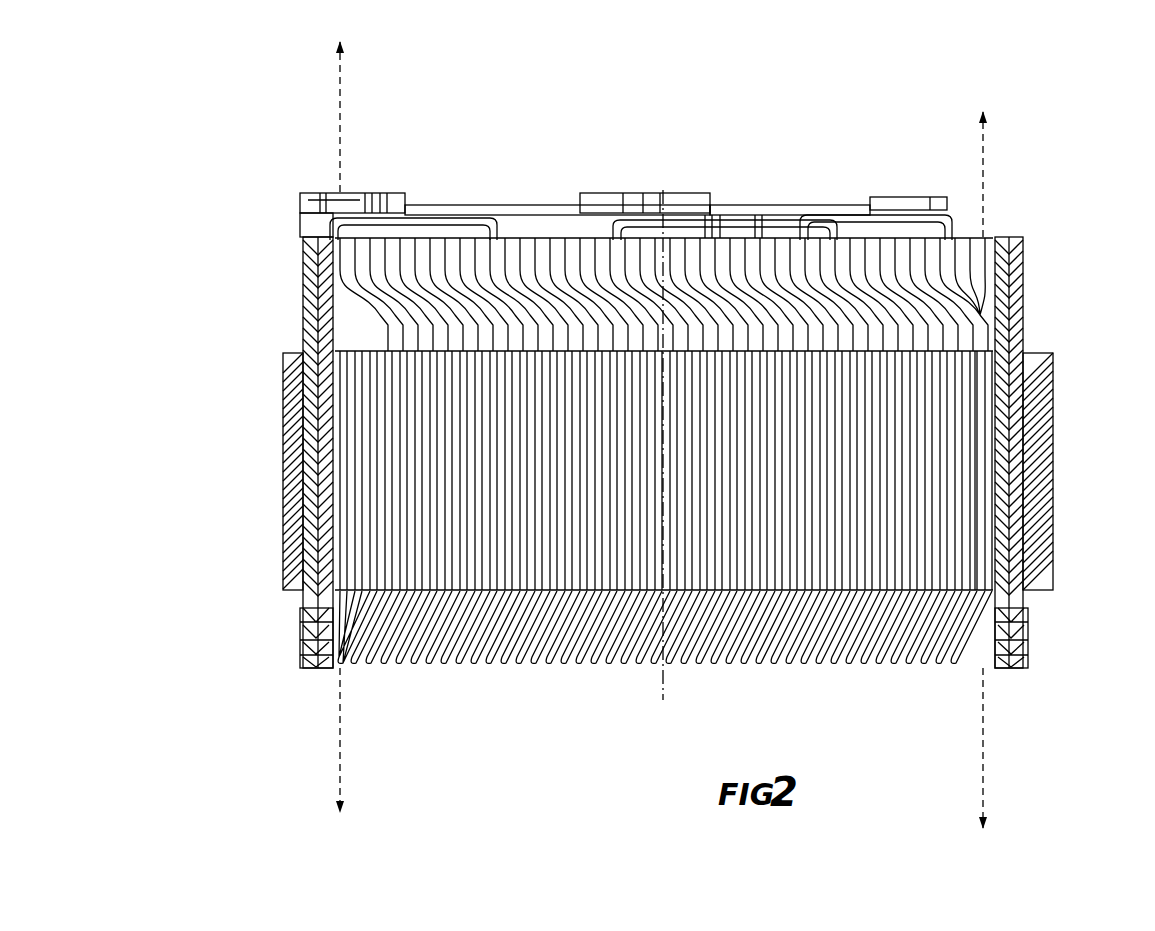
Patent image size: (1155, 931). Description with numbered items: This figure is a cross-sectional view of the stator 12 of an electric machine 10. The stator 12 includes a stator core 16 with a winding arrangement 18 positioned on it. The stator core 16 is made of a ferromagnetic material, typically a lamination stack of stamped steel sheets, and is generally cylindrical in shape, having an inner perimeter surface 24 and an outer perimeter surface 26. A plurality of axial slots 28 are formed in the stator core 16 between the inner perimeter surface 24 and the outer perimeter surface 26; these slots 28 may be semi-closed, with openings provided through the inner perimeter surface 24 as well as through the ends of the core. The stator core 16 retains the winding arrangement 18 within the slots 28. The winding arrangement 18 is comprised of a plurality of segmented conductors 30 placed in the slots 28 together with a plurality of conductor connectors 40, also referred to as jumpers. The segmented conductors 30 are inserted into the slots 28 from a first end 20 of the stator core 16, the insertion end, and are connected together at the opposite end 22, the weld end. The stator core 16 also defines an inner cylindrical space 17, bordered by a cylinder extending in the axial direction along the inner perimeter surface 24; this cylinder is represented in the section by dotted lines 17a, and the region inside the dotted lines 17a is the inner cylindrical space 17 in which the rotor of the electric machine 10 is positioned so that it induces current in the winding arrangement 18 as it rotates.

The electric machine 10 is at (228, 140).
The stator 12 is at (300, 318).
The stator core 16 is at (900, 432).
The inner cylindrical space 17 is at (920, 152).
The dotted lines 17a is at (342, 88).
The winding arrangement 18 is at (712, 218).
The first end 20 is at (1027, 678).
The opposite end 22 is at (1027, 235).
The inner perimeter surface 24 is at (995, 552).
The outer perimeter surface 26 is at (1053, 573).
The axial slots 28 is at (660, 535).
The segmented conductors 30 is at (600, 220).
The conductor connectors 40 is at (455, 213).